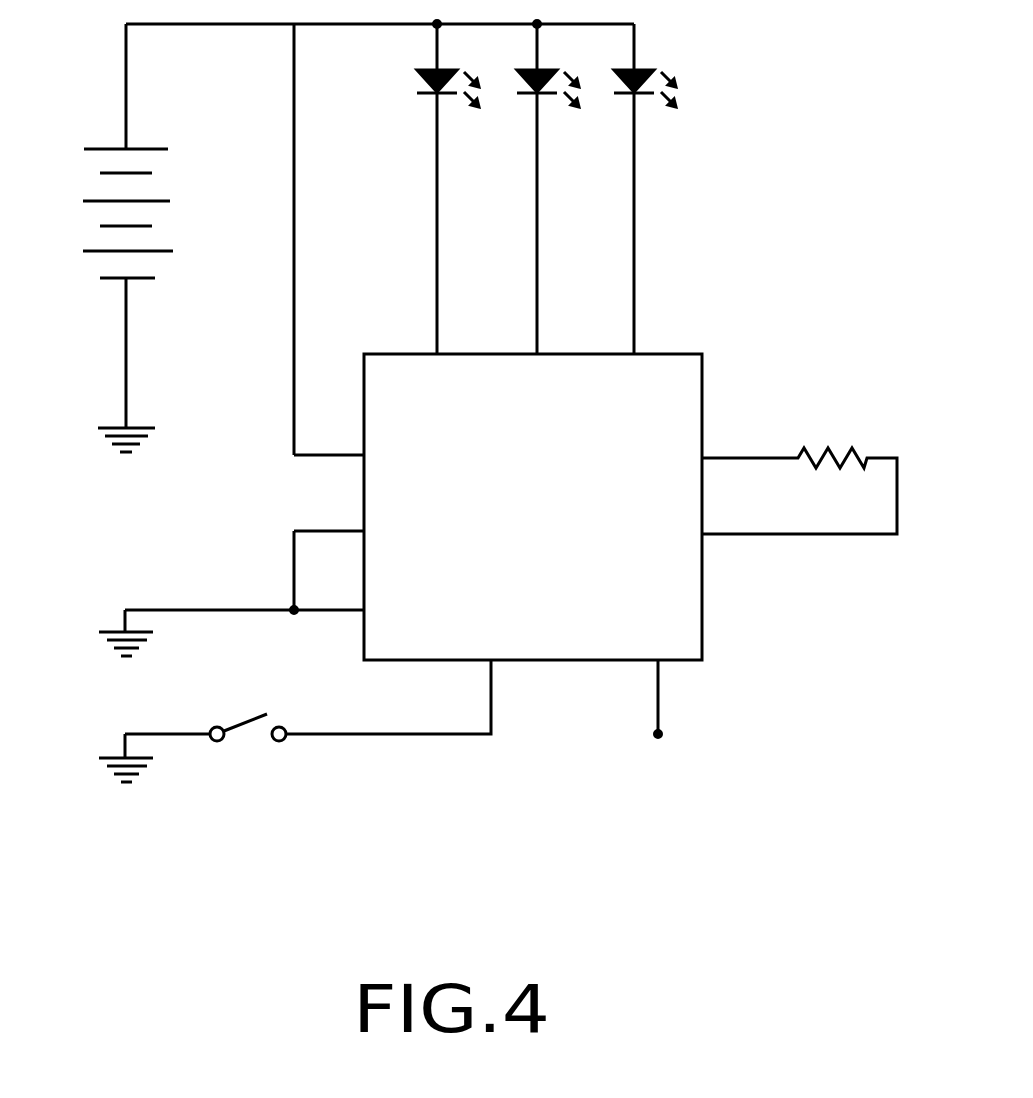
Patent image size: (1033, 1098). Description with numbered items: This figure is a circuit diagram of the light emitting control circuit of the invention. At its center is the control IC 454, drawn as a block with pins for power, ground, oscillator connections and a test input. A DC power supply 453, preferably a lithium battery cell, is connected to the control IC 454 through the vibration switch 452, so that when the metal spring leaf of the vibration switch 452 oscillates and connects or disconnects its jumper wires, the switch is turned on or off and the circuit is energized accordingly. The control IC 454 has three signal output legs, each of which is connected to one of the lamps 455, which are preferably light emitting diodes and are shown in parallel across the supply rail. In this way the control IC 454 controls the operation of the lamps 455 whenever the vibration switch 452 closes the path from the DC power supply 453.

The vibration switch 452 is at (250, 737).
The DC power supply 453 is at (93, 201).
The control IC 454 is at (674, 378).
The lamps 455 is at (640, 69).